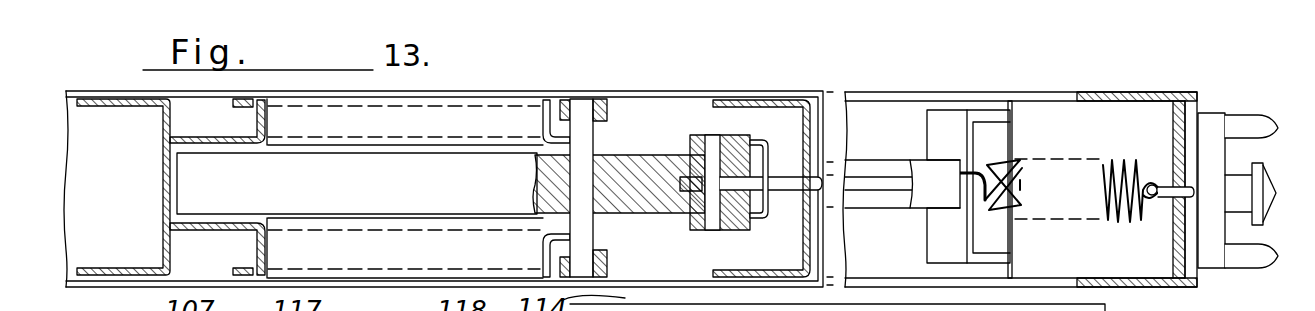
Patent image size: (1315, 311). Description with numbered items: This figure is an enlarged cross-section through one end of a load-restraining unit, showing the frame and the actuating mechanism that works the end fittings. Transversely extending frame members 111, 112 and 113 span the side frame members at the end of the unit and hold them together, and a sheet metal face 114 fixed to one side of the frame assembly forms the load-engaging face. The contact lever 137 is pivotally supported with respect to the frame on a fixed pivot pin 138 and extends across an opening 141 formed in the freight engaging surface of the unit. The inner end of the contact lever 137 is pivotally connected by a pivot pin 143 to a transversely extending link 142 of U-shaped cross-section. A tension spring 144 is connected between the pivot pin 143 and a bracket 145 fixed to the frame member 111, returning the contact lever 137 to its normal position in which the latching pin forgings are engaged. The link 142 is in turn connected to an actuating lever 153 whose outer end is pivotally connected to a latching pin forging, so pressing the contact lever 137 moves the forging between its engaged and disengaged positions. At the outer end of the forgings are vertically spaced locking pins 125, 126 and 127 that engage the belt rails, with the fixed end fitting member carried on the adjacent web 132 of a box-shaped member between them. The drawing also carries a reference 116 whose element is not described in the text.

The transversely extending frame member 111 is at (1113, 92).
The transversely extending frame member 112 is at (778, 99).
The transversely extending frame member 113 is at (100, 99).
The sheet metal face 114 is at (500, 91).
The pin end 116 is at (1312, 97).
The locking pin 125 is at (1274, 215).
The locking pin 126 is at (1255, 118).
The locking pin 127 is at (1213, 310).
The web 132 is at (1258, 163).
The contact lever 137 is at (377, 198).
The fixed pivot pin 138 is at (578, 106).
The opening 141 is at (267, 120).
The link 142 is at (760, 219).
The pivot pin 143 is at (712, 137).
The tension spring 144 is at (868, 178).
The bracket 145 is at (1168, 185).
The actuating lever 153 is at (890, 213).